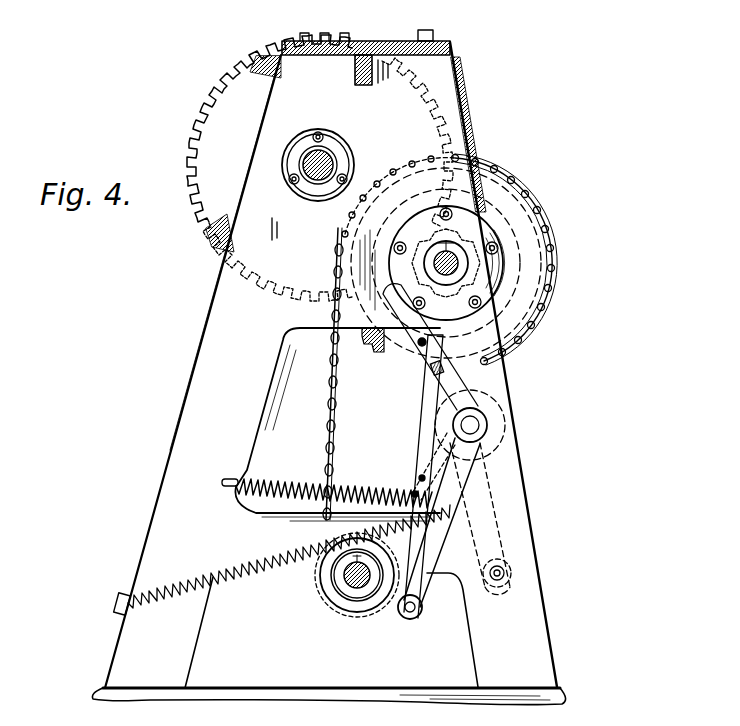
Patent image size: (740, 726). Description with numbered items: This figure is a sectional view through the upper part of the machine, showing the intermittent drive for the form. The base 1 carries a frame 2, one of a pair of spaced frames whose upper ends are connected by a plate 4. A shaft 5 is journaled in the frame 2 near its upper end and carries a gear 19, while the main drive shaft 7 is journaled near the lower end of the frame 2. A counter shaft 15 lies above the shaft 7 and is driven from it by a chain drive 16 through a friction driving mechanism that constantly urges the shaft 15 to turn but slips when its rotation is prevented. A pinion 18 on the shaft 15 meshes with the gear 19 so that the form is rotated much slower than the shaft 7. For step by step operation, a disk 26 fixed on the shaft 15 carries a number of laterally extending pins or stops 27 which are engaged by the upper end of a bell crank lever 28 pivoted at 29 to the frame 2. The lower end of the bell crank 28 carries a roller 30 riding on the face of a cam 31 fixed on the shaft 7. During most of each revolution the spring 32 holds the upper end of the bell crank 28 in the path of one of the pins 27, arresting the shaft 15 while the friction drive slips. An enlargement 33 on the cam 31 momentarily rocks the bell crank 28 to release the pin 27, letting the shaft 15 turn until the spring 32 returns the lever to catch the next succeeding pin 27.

The base 1 is at (243, 690).
The frame 2 is at (207, 311).
The plate 4 is at (397, 41).
The shaft 5 is at (303, 163).
The main drive shaft 7 is at (350, 587).
The counter shaft 15 is at (458, 266).
The chain drive 16 is at (326, 402).
The pinion 18 is at (537, 193).
The gear 19 is at (212, 80).
The disk 26 is at (503, 287).
The pins or stops 27 is at (449, 208).
The bell crank lever 28 is at (460, 387).
The pivot 29 is at (488, 420).
The roller 30 is at (412, 620).
The cam 31 is at (333, 545).
The spring 32 is at (258, 488).
The enlargement 33 is at (412, 563).